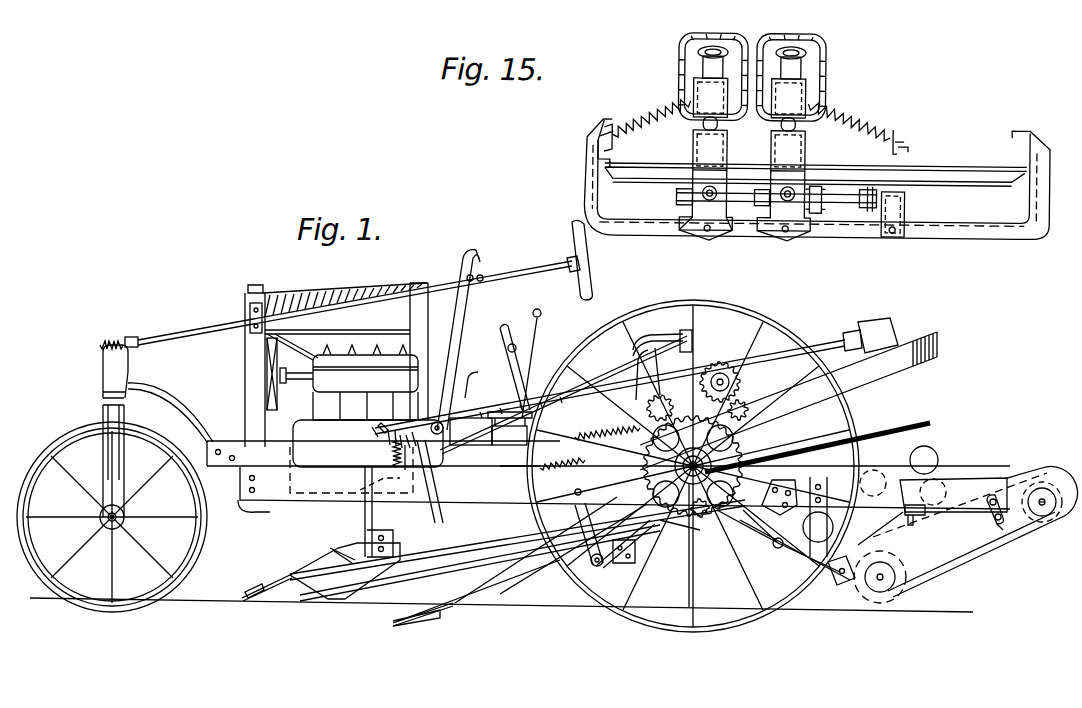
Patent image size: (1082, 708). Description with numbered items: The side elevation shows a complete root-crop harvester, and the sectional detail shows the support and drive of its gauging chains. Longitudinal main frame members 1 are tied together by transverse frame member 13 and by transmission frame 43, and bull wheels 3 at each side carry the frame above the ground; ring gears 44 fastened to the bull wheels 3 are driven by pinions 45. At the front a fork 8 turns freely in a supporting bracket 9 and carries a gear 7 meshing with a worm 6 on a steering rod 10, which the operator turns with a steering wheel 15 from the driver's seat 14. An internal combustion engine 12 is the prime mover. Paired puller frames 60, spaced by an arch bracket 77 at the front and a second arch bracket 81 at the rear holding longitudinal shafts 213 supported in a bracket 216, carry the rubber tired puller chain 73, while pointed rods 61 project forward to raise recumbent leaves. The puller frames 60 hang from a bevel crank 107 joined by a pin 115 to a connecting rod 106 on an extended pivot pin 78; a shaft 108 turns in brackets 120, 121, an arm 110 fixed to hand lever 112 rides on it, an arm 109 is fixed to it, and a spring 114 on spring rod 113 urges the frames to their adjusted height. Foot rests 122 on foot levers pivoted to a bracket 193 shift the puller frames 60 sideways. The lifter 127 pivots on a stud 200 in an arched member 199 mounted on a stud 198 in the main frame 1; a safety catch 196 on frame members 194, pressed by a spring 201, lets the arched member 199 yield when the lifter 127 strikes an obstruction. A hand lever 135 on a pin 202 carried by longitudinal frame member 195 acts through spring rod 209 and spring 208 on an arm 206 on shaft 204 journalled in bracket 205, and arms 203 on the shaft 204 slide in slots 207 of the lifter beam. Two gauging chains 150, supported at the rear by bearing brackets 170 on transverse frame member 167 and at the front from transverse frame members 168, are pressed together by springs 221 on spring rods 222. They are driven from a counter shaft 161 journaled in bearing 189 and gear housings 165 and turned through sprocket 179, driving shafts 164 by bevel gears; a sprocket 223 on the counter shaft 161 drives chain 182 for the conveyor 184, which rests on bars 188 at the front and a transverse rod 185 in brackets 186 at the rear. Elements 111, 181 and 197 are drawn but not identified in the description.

In FIG. 15, the main frame members 1 is at (1020, 125).
In FIG. 1, the main frame members 1 is at (972, 483).
In FIG. 1, the bull wheels 3 is at (786, 330).
In FIG. 1, the worm 6 is at (125, 340).
In FIG. 1, the gear 7 is at (99, 345).
In FIG. 1, the fork 8 is at (105, 458).
In FIG. 1, the supporting bracket 9 is at (163, 385).
In FIG. 1, the steering rod 10 is at (180, 333).
In FIG. 1, the internal combustion engine 12 is at (360, 355).
In FIG. 1, the transverse frame member 13 is at (448, 560).
In FIG. 1, the driver's seat 14 is at (672, 332).
In FIG. 1, the steering wheel 15 is at (576, 236).
In FIG. 1, the transmission frame 43 is at (664, 396).
In FIG. 1, the ring gears 44 is at (630, 565).
In FIG. 1, the pinions 45 is at (722, 362).
In FIG. 1, the puller frames 60 is at (850, 332).
In FIG. 1, the pointed rods 61 is at (262, 598).
In FIG. 1, the puller chain 73 is at (945, 350).
In FIG. 1, the arch bracket 77 is at (366, 520).
In FIG. 1, the extended pivot pin 78 is at (345, 515).
In FIG. 1, the second arch bracket 81 is at (723, 378).
In FIG. 1, the connecting rod 106 is at (380, 460).
In FIG. 1, the bevel crank 107 is at (388, 430).
In FIG. 1, the shaft 108 is at (412, 432).
In FIG. 1, the arm 109 is at (440, 500).
In FIG. 1, the arm 110 is at (407, 470).
In FIG. 1, the lever 111 is at (466, 385).
In FIG. 1, the hand lever 112 is at (478, 254).
In FIG. 1, the spring rod 113 is at (400, 435).
In FIG. 1, the spring 114 is at (399, 470).
In FIG. 1, the pin 115 is at (378, 428).
In FIG. 1, the bracket 120 is at (406, 435).
In FIG. 1, the bracket 121 is at (580, 540).
In FIG. 1, the foot rests 122 is at (512, 412).
In FIG. 1, the lifter 127 is at (455, 606).
In FIG. 1, the hand lever 135 is at (503, 330).
In FIG. 15, the gauging chains 150 is at (822, 45).
In FIG. 1, the gauging chains 150 is at (935, 425).
In FIG. 15, the counter shaft 161 is at (848, 205).
In FIG. 15, the shafts 164 is at (786, 196).
In FIG. 15, the gear housings 165 is at (690, 215).
In FIG. 15, the transverse frame member 167 is at (935, 176).
In FIG. 1, the transverse frame member 167 is at (915, 560).
In FIG. 15, the transverse frame members 168 is at (992, 234).
In FIG. 1, the bearing bracket 170 is at (940, 455).
In FIG. 15, the sprocket 179 is at (870, 208).
In FIG. 1, the pulley pin 181 is at (1044, 506).
In FIG. 1, the chain 182 is at (885, 595).
In FIG. 1, the conveyor 184 is at (1035, 482).
In FIG. 1, the transverse rod 185 is at (1000, 525).
In FIG. 1, the brackets 186 is at (1003, 524).
In FIG. 1, the bars 188 is at (840, 586).
In FIG. 15, the bearing 189 is at (906, 213).
In FIG. 1, the bracket 193 is at (495, 426).
In FIG. 1, the frame members 194 is at (640, 380).
In FIG. 1, the longitudinal frame member 195 is at (290, 512).
In FIG. 1, the safety catch 196 is at (530, 486).
In FIG. 1, the rack 197 is at (578, 489).
In FIG. 1, the stud 198 is at (545, 540).
In FIG. 1, the arched member 199 is at (577, 495).
In FIG. 1, the stud 200 is at (595, 566).
In FIG. 1, the spring 201 is at (553, 380).
In FIG. 1, the pin 202 is at (600, 430).
In FIG. 1, the arms 203 is at (760, 545).
In FIG. 1, the shaft 204 is at (780, 548).
In FIG. 1, the bracket 205 is at (790, 545).
In FIG. 1, the arm 206 is at (770, 548).
In FIG. 1, the slots 207 is at (722, 520).
In FIG. 1, the spring 208 is at (672, 520).
In FIG. 1, the spring rod 209 is at (660, 525).
In FIG. 1, the longitudinal shafts 213 is at (822, 346).
In FIG. 1, the bracket 216 is at (885, 316).
In FIG. 15, the springs 221 is at (645, 103).
In FIG. 15, the spring rods 222 is at (610, 123).
In FIG. 15, the sprocket 223 is at (818, 186).